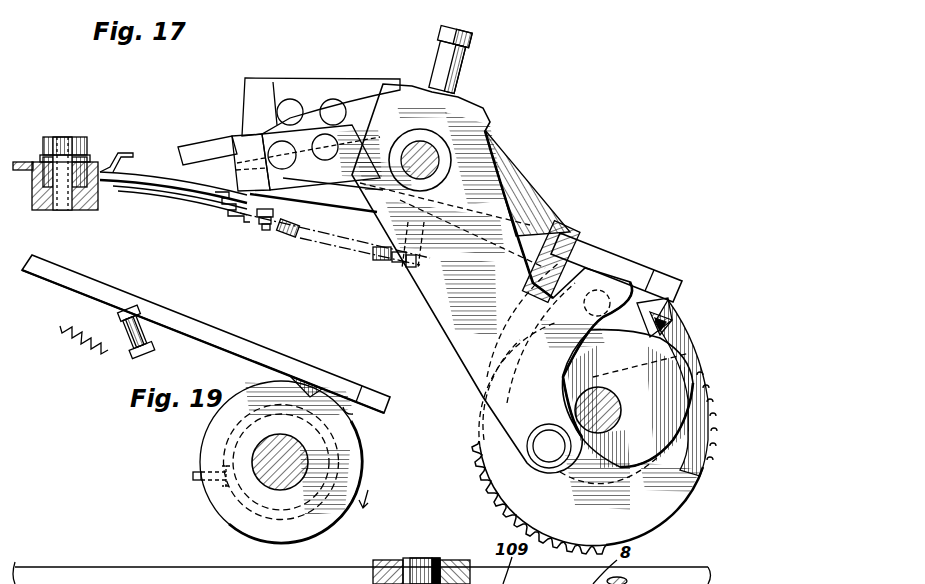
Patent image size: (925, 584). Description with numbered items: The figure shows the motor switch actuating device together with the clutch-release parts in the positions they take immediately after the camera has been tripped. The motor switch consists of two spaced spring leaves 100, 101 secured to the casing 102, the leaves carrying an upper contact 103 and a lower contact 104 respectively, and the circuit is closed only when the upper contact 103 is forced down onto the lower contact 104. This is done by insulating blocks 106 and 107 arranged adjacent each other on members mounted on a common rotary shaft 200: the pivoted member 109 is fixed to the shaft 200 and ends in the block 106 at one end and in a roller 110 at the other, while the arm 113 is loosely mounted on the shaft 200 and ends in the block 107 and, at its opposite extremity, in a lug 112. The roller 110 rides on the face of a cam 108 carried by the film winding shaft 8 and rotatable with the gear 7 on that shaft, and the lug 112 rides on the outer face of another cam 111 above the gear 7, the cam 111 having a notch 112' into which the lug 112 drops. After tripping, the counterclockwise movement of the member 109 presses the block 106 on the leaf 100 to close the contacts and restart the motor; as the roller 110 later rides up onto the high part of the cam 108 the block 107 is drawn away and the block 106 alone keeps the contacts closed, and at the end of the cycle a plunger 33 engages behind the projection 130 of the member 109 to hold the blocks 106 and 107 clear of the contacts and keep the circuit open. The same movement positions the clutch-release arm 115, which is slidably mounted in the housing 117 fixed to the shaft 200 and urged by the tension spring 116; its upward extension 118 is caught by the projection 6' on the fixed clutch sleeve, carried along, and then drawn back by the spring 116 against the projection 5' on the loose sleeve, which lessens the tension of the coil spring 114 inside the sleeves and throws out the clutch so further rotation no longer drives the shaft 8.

In FIG. 17, the casing 102 is at (58, 137).
In FIG. 17, the spring leaf 100 is at (140, 170).
In FIG. 17, the spring leaf 101 is at (157, 193).
In FIG. 17, the upper contact 103 is at (220, 193).
In FIG. 17, the lower contact 104 is at (240, 213).
In FIG. 17, the tension spring 116 is at (290, 237).
In FIG. 19, the tension spring 116 is at (72, 345).
In FIG. 17, the insulating block 107 is at (252, 86).
In FIG. 17, the insulating block 106 is at (233, 138).
In FIG. 17, the pivoted member 109 is at (492, 278).
In FIG. 17, the housing 117 is at (482, 108).
In FIG. 17, the rotary shaft 200 is at (427, 140).
In FIG. 17, the arm 113 is at (520, 197).
In FIG. 17, the projection 130 is at (572, 292).
In FIG. 17, the arm 115 is at (592, 272).
In FIG. 19, the arm 115 is at (219, 331).
In FIG. 17, the upward extension 118 is at (670, 273).
In FIG. 19, the upward extension 118 is at (377, 394).
In FIG. 17, the plunger 33 is at (610, 292).
In FIG. 17, the lug 112 is at (691, 309).
In FIG. 17, the notch 112' is at (696, 319).
In FIG. 17, the gear 7 is at (713, 437).
In FIG. 17, the cam 108 is at (653, 412).
In FIG. 17, the shaft 8 is at (620, 400).
In FIG. 19, the shaft 8 is at (268, 482).
In FIG. 17, the roller 110 is at (533, 450).
In FIG. 17, the cam 111 is at (497, 362).
In FIG. 19, the projection 5' is at (309, 369).
In FIG. 19, the projection 6' is at (371, 424).
In FIG. 19, the coil spring 114 is at (193, 478).